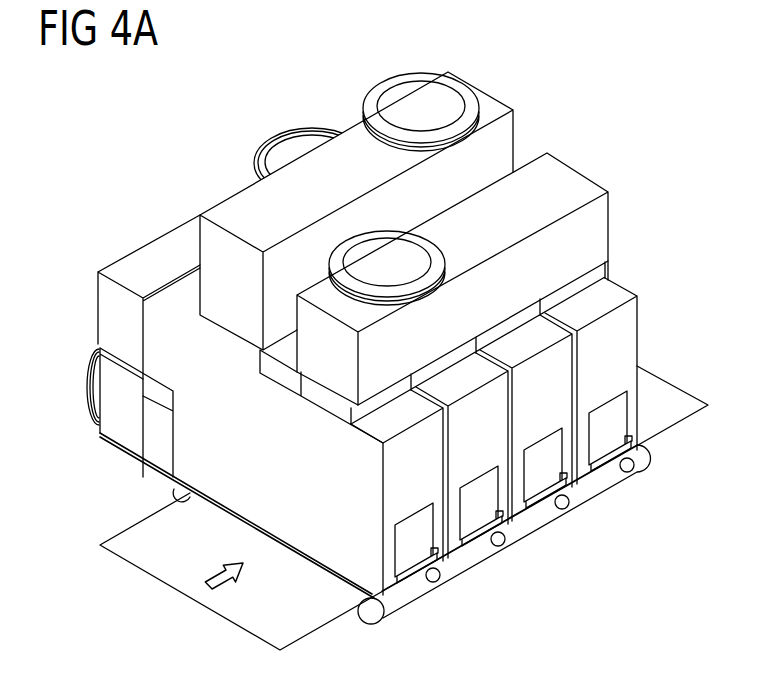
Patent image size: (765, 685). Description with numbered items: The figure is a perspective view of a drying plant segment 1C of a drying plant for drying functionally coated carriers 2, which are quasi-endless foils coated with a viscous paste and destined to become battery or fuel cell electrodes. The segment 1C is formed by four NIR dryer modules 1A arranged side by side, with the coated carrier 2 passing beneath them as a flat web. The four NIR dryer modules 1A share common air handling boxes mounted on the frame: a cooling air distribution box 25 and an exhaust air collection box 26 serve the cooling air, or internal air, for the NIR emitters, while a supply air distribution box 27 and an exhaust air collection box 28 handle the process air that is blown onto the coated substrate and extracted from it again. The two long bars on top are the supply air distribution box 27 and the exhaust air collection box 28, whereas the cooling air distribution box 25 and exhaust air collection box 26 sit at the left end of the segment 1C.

The NIR dryer module 1A is at (334, 567).
The drying plant segment 1C is at (415, 314).
The functionally coated carrier 2 is at (134, 549).
The cooling air distribution box 25 is at (105, 424).
The exhaust air collection box 26 is at (104, 309).
The supply air distribution box 27 is at (240, 203).
The exhaust air collection box 28 is at (586, 187).